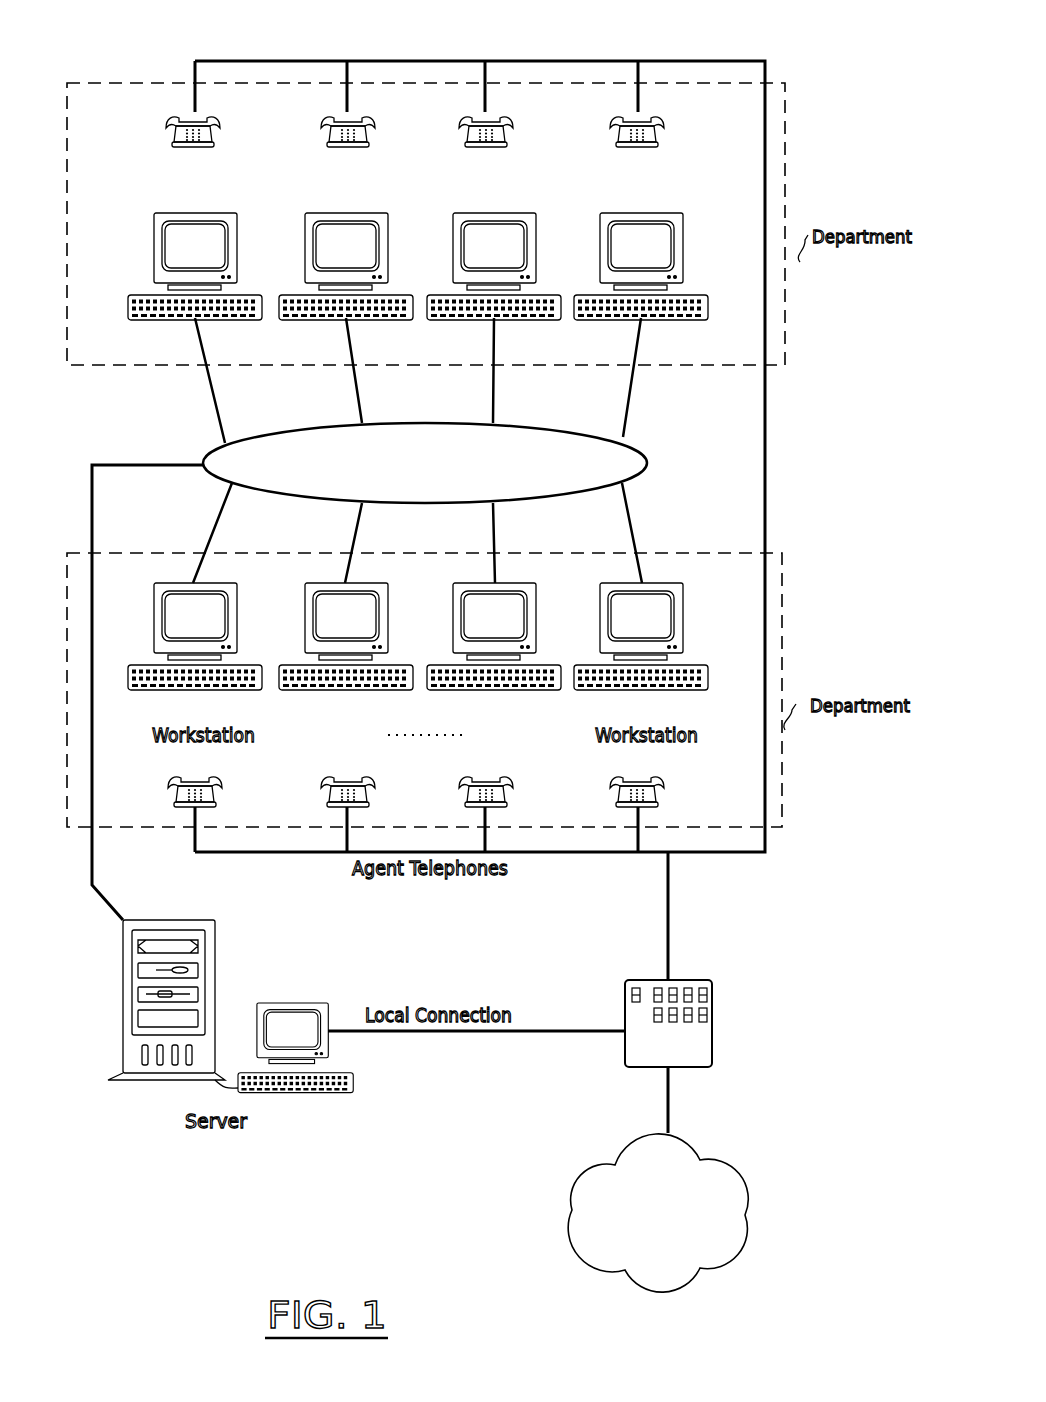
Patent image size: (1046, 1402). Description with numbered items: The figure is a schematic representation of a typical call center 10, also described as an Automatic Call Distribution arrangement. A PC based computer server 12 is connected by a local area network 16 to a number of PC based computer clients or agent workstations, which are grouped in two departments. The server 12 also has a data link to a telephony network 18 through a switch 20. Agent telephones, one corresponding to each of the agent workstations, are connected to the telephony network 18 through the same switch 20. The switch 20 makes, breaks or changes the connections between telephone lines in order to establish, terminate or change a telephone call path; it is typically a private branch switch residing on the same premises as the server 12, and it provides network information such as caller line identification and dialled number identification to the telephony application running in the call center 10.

The call center 10 is at (806, 85).
The computer server 12 is at (156, 1082).
The local area network 16 is at (648, 467).
The telephony network 18 is at (570, 1215).
The switch 20 is at (622, 1008).